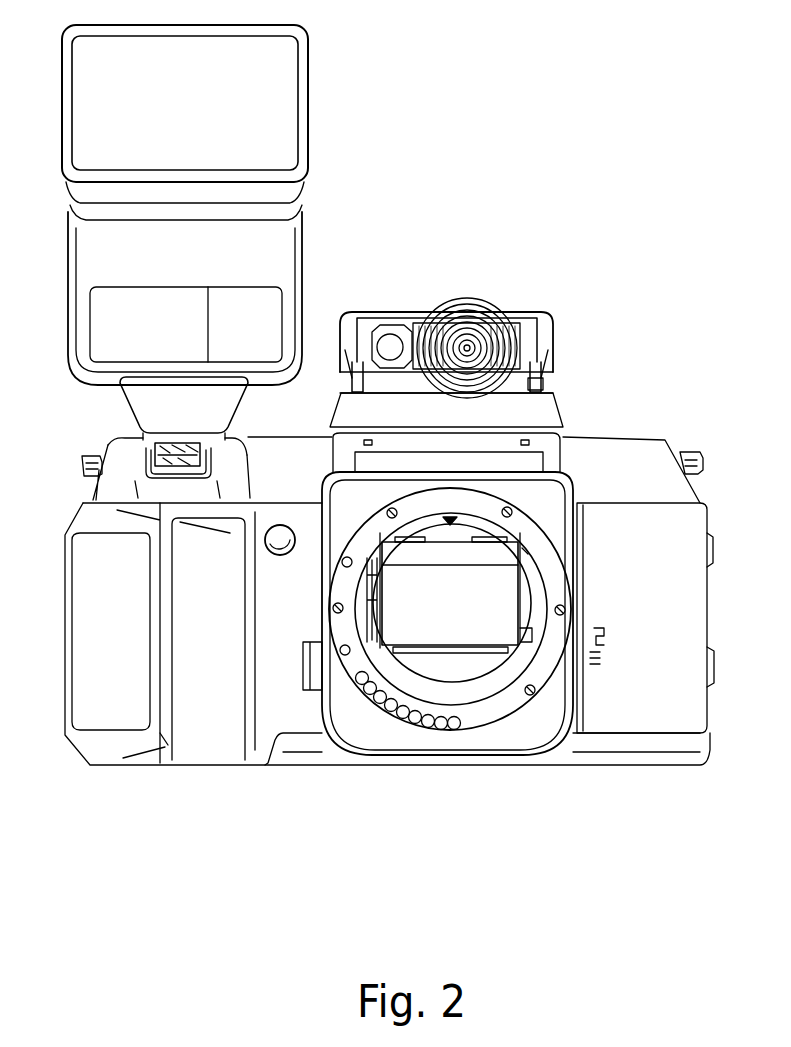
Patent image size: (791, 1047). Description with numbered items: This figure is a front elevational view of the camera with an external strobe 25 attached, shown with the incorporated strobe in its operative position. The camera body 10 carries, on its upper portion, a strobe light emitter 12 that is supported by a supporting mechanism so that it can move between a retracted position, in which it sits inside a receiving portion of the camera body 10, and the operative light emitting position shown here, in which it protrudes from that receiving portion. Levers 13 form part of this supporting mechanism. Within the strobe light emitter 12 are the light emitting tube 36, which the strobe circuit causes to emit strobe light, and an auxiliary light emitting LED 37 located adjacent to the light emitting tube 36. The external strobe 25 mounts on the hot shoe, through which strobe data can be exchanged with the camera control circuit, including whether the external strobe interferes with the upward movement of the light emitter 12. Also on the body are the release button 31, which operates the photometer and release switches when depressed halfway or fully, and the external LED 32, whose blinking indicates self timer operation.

The camera body 10 is at (668, 422).
The strobe light emitter 12 is at (459, 292).
The levers 13 is at (538, 375).
The external strobe 25 is at (308, 73).
The release button 31 is at (112, 437).
The external LED 32 is at (268, 548).
The light emitting tube 36 is at (476, 297).
The auxiliary light emitting LED 37 is at (391, 334).